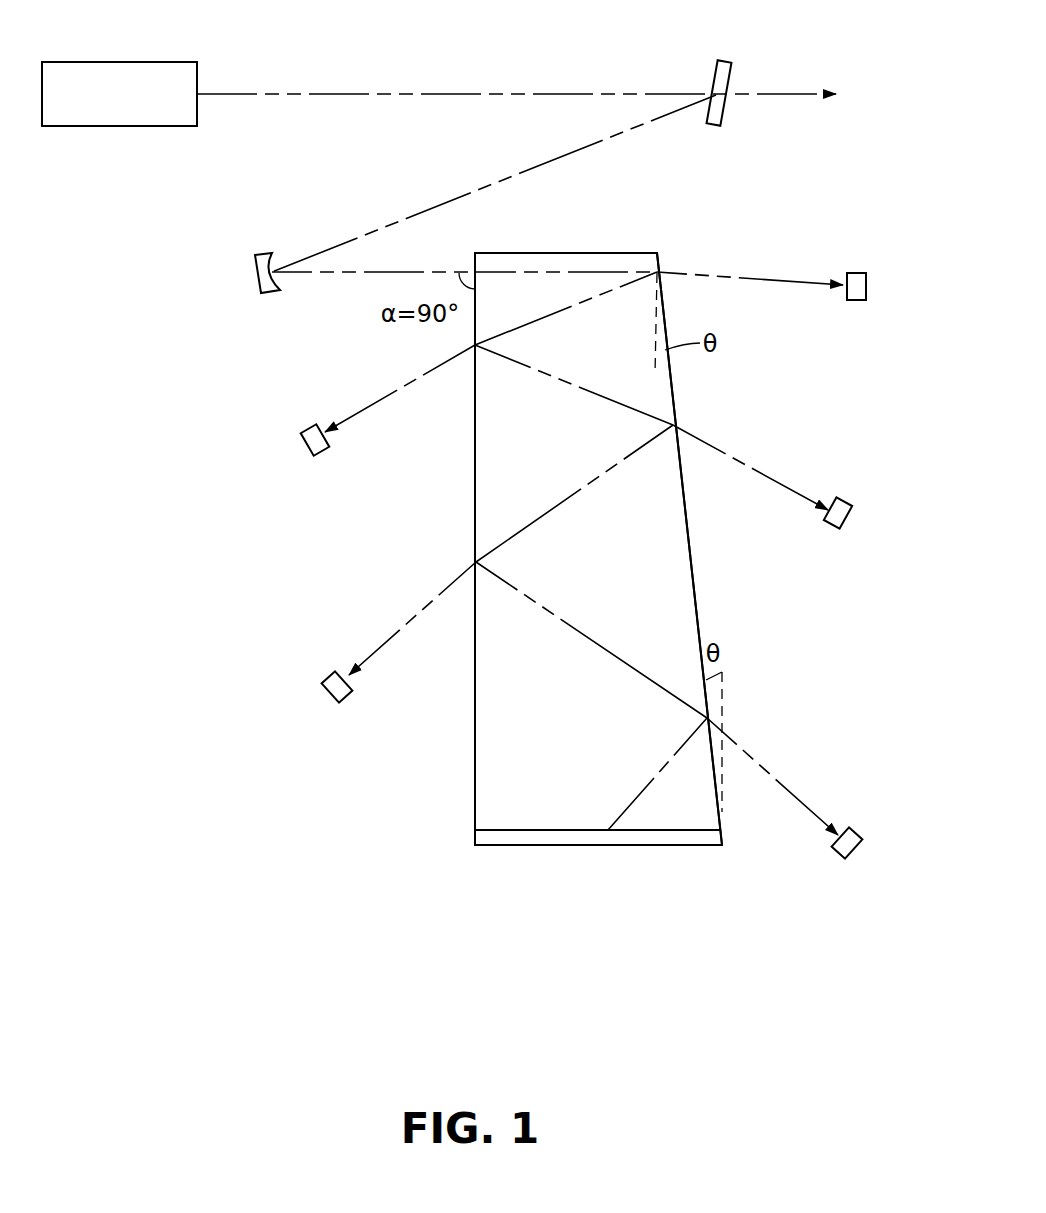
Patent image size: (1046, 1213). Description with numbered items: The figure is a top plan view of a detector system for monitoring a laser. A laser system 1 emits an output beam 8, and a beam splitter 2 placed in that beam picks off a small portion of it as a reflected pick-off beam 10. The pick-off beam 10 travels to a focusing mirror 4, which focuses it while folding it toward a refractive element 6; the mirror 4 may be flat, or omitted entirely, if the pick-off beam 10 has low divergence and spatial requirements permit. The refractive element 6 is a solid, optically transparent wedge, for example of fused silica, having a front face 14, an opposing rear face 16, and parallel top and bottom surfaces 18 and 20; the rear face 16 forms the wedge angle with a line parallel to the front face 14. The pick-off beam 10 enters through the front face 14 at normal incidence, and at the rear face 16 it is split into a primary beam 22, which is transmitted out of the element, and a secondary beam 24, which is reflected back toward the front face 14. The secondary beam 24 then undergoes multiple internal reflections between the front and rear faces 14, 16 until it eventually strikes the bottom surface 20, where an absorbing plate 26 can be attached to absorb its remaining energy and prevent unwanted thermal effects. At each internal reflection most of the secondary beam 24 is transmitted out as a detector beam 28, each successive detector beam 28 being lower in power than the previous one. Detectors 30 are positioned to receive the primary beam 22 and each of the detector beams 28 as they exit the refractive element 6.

The laser system 1 is at (119, 94).
The beam splitter 2 is at (724, 62).
The focusing mirror 4 is at (264, 252).
The refractive element 6 is at (597, 262).
The output beam 8 is at (437, 88).
The pick-off beam 10 is at (467, 190).
The front face 14 is at (475, 468).
The rear face 16 is at (670, 387).
The top surface 18 is at (558, 250).
The bottom surface 20 is at (533, 833).
The primary beam 22 is at (765, 275).
The secondary beam 24 is at (500, 330).
The absorbing plate 26 is at (607, 847).
The detector beams 28 is at (368, 408).
The detectors 30 is at (857, 272).